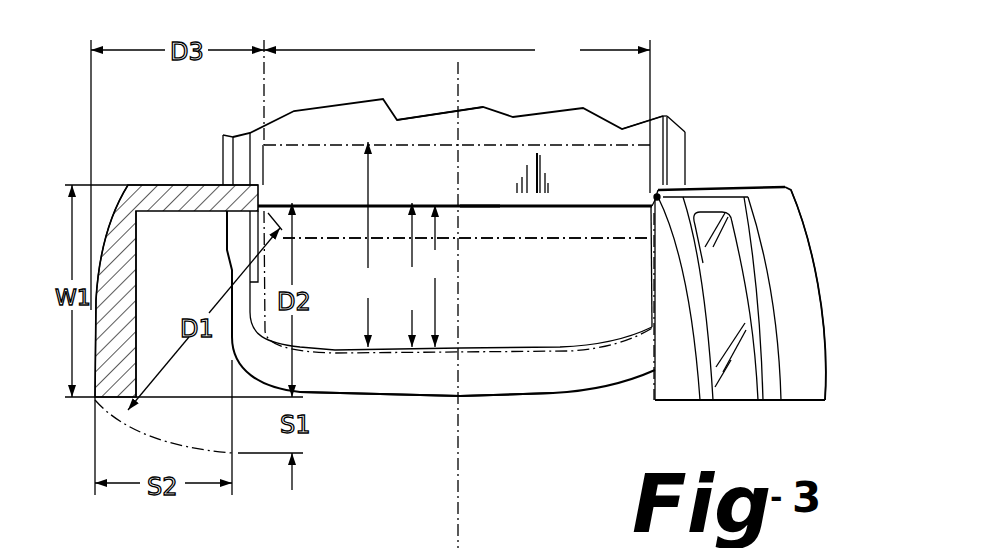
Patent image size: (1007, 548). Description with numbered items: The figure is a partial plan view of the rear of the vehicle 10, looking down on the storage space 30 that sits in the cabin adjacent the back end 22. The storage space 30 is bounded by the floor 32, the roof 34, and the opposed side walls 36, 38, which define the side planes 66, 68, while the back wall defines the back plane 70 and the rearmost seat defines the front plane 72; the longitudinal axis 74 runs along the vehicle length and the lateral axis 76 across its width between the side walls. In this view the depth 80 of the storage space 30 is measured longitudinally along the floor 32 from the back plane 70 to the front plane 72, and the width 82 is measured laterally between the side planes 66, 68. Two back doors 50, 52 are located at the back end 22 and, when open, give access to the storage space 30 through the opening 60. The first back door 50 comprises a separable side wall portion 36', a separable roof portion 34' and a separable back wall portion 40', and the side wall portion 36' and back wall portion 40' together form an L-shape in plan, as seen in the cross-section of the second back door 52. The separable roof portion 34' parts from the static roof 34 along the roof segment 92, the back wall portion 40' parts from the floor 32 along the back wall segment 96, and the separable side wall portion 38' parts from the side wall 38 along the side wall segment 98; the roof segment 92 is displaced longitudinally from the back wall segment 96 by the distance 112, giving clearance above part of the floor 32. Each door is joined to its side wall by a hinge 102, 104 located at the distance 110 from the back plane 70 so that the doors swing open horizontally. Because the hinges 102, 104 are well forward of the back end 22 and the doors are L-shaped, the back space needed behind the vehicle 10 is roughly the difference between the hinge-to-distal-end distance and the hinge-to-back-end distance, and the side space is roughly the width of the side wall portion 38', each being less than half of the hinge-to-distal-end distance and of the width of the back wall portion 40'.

The vehicle 10 is at (824, 57).
The back end 22 is at (488, 420).
The storage space 30 is at (343, 315).
The floor 32 is at (572, 339).
The roof 34 is at (455, 179).
The separable roof portion 34' is at (570, 330).
The side wall 36 is at (723, 120).
The separable side wall portion 36' is at (735, 152).
The side wall 38 is at (228, 125).
The separable side wall portion 38' is at (176, 250).
The separable back wall portion 40' is at (480, 323).
The first back door 50 is at (828, 215).
The second back door 52 is at (102, 210).
The opening 60 is at (423, 425).
The side plane 66 is at (650, 272).
The side plane 68 is at (265, 265).
The back plane 70 is at (387, 349).
The front plane 72 is at (337, 141).
The longitudinal axis 74 is at (460, 73).
The lateral axis 76 is at (515, 240).
The depth 80 is at (363, 309).
The width 82 is at (457, 115).
The roof segment 92 is at (451, 345).
The back wall segment 96 is at (497, 350).
The side wall segment 98 is at (248, 240).
The hinge 102 is at (656, 196).
The hinge 104 is at (263, 183).
The distance 110 is at (416, 275).
The distance 112 is at (443, 276).